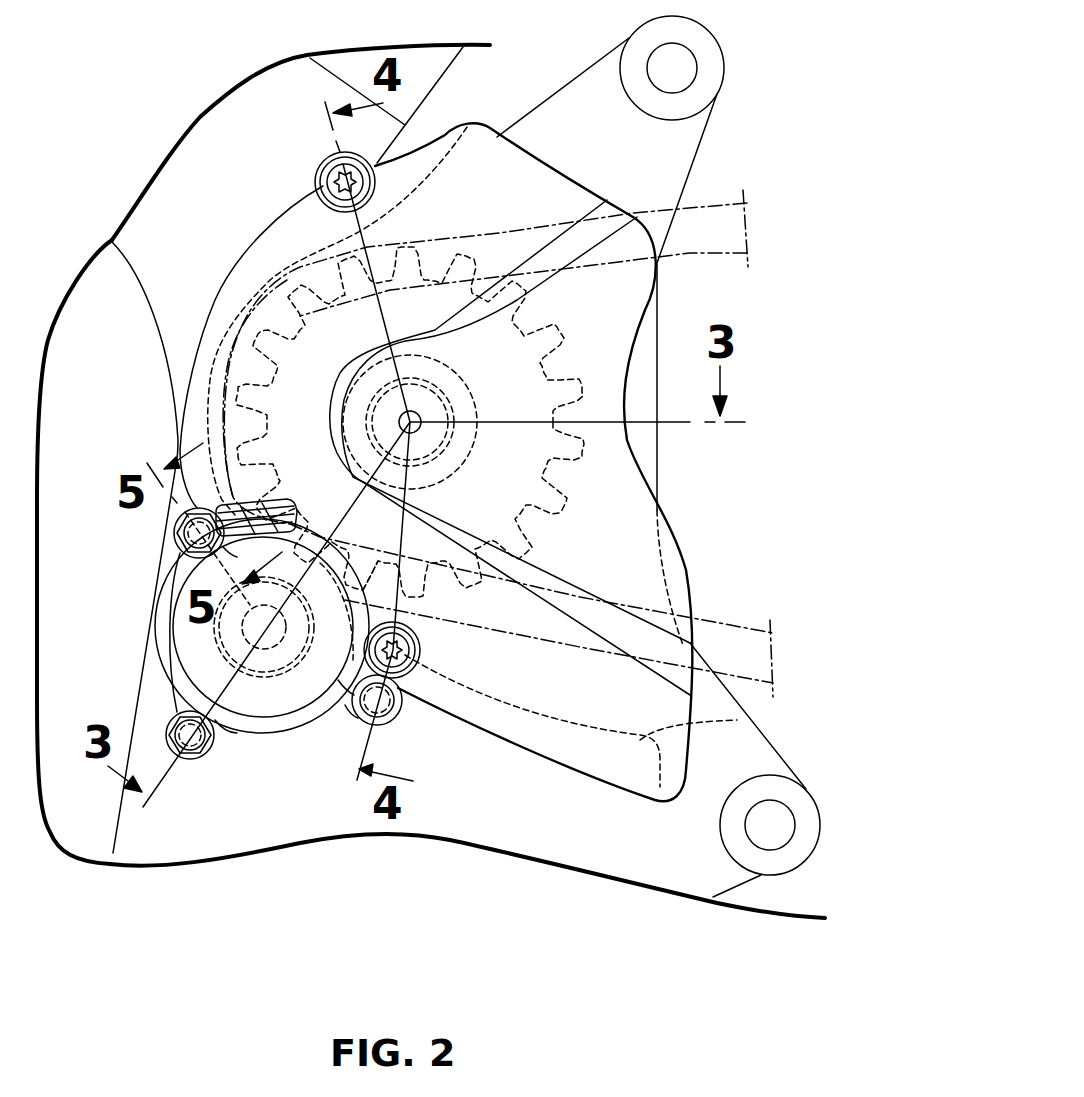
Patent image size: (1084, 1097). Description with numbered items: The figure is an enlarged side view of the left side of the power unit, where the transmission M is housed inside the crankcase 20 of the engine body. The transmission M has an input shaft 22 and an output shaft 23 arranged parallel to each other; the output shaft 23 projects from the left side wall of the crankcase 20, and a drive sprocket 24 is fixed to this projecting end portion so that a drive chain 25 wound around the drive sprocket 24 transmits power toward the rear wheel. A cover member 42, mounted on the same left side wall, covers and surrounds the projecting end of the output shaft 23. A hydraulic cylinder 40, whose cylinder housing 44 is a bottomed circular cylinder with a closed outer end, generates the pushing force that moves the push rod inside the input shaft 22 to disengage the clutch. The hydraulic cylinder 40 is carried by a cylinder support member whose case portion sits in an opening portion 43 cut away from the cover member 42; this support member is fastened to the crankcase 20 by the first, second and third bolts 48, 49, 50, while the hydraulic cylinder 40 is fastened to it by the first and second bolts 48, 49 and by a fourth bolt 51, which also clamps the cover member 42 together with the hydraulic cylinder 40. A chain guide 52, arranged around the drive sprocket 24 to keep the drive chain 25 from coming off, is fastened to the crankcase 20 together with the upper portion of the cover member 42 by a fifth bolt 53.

The crankcase 20 is at (605, 853).
The input shaft 22 is at (428, 390).
The output shaft 23 is at (267, 677).
The drive sprocket 24 is at (455, 277).
The drive chain 25 is at (707, 204).
The hydraulic cylinder 40 is at (232, 666).
The cover member 42 is at (677, 562).
The opening portion 43 is at (357, 590).
The cylinder housing 44 is at (156, 627).
The first bolt 48 is at (188, 535).
The second bolt 49 is at (185, 735).
The third bolt 50 is at (392, 702).
The fourth bolt 51 is at (420, 645).
The chain guide 52 is at (740, 720).
The fifth bolt 53 is at (325, 181).
The transmission M is at (268, 369).